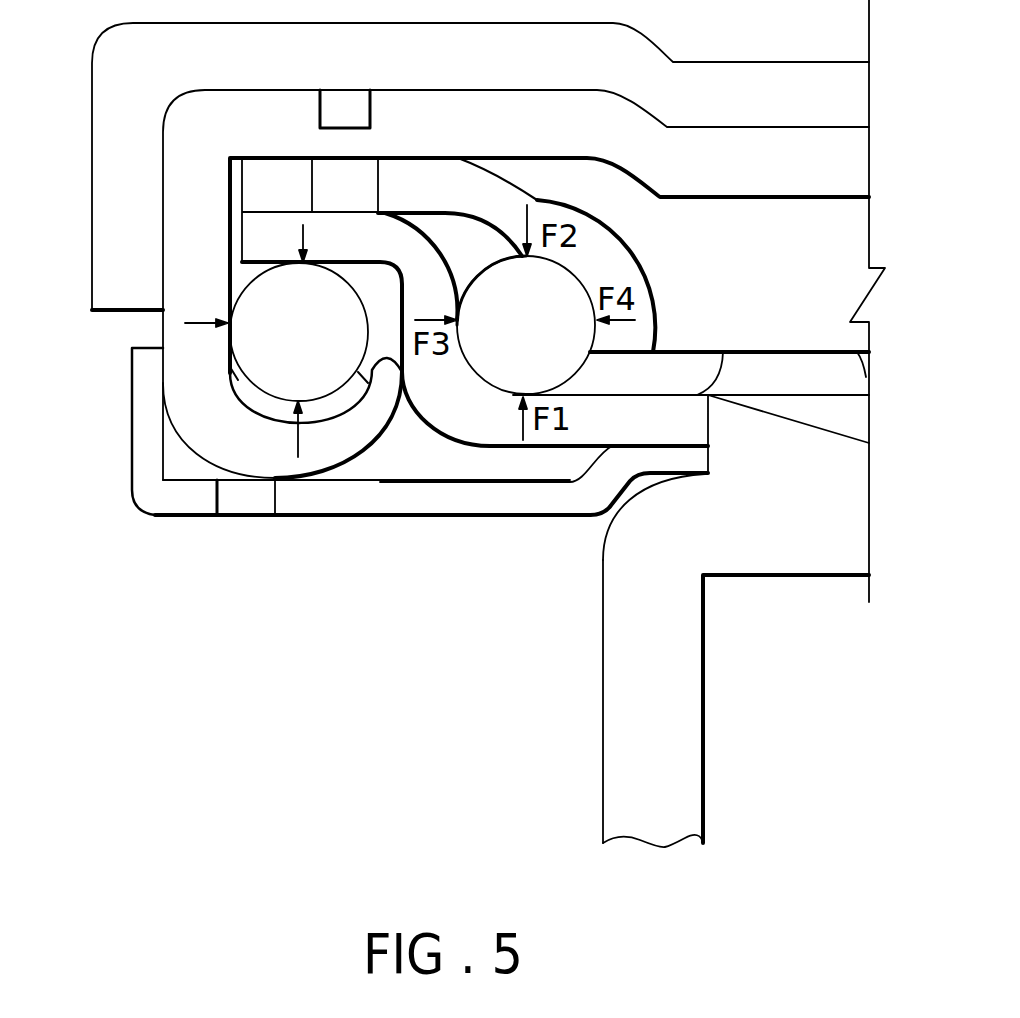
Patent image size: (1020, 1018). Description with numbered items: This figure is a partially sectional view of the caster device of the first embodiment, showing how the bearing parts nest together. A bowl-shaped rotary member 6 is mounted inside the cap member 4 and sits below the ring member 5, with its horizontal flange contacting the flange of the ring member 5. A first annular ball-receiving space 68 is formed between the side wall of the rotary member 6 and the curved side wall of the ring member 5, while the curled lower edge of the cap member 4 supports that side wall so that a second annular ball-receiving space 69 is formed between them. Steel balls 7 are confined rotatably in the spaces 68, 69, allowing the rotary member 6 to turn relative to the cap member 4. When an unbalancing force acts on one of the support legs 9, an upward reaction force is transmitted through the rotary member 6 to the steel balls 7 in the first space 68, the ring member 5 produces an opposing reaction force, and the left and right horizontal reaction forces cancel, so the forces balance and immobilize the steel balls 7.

The cap member 4 is at (183, 253).
The ring member 5 is at (643, 266).
The bowl-shaped rotary member 6 is at (578, 430).
The steel balls 7 is at (330, 367).
The support leg 9 is at (620, 683).
The first annular ball-receiving space 68 is at (462, 240).
The second annular ball-receiving space 69 is at (383, 320).